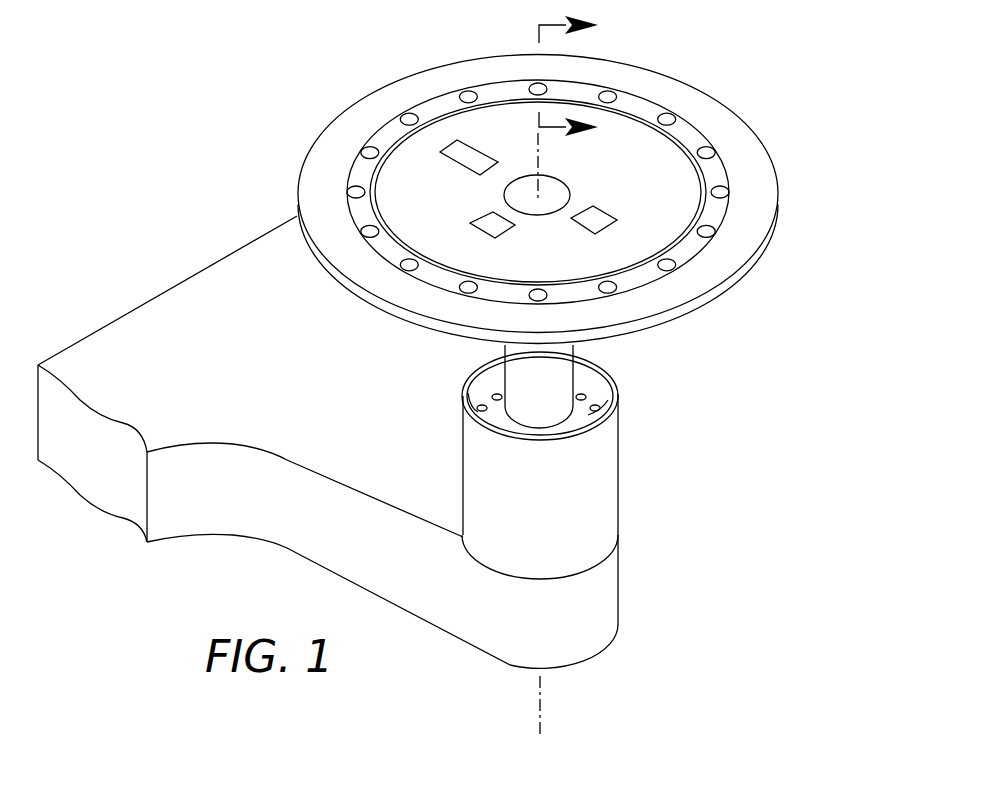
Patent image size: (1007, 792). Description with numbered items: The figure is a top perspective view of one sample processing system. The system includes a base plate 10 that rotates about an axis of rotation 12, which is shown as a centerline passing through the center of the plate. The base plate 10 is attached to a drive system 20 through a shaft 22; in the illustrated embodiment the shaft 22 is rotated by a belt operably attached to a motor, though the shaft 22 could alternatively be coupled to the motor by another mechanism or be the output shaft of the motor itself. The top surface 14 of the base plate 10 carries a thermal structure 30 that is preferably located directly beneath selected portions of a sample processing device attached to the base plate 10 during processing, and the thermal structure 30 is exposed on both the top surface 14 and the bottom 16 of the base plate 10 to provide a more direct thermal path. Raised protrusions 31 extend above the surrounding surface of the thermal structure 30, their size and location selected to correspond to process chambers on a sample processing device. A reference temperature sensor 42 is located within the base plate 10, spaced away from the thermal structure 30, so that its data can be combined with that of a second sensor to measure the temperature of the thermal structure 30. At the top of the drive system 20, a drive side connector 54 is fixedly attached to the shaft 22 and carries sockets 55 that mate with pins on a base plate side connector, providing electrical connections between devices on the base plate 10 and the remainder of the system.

The base plate 10 is at (800, 197).
The axis of rotation 12 is at (505, 194).
The top surface 14 is at (722, 253).
The bottom 16 is at (683, 322).
The drive system 20 is at (656, 509).
The shaft 22 is at (560, 365).
The thermal structure 30 is at (714, 163).
The raised protrusions 31 is at (666, 111).
The reference temperature sensor 42 is at (464, 148).
The drive side connector 54 is at (594, 411).
The sockets 55 is at (483, 402).